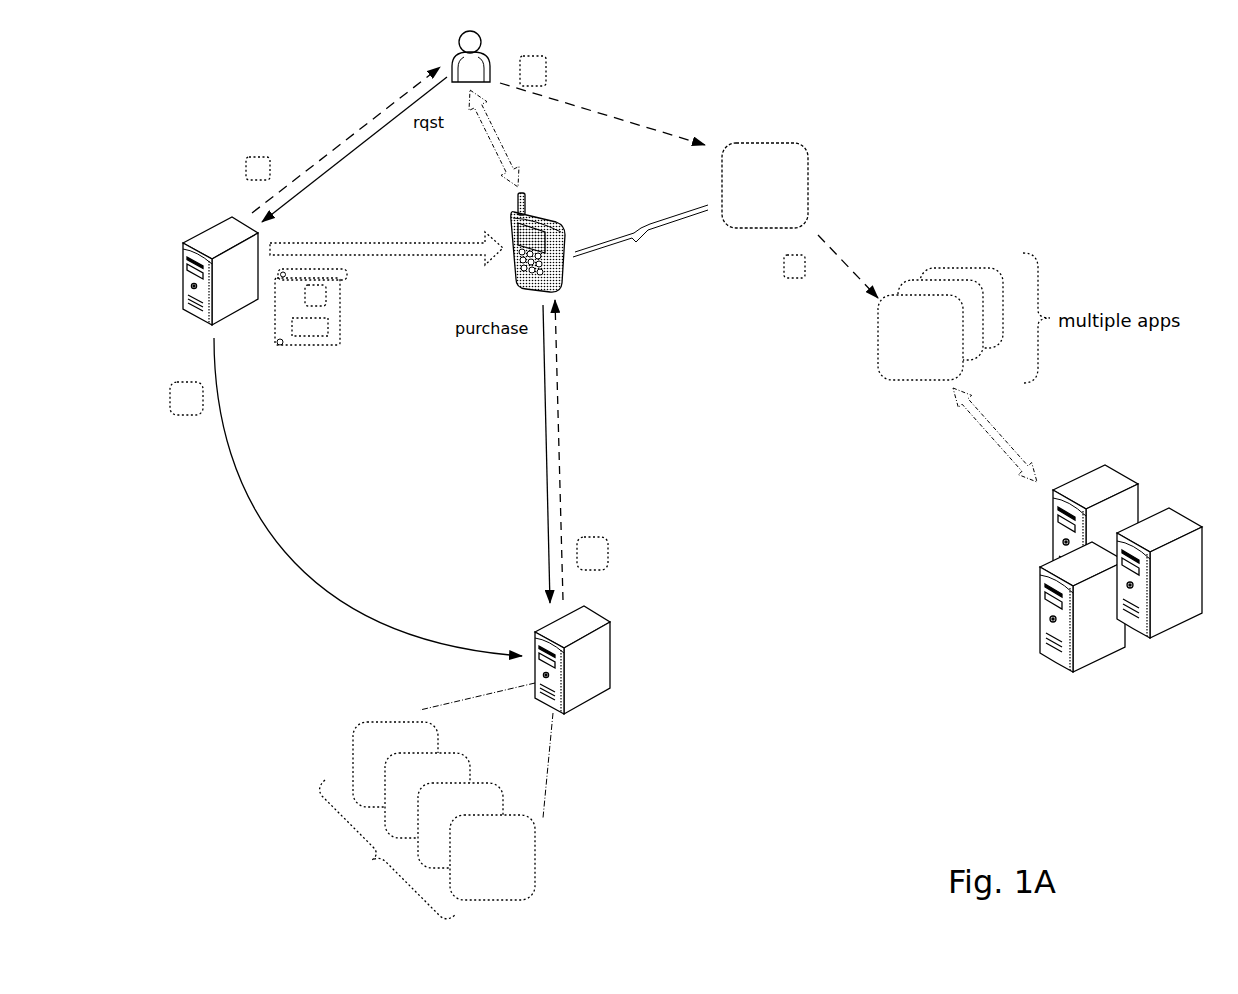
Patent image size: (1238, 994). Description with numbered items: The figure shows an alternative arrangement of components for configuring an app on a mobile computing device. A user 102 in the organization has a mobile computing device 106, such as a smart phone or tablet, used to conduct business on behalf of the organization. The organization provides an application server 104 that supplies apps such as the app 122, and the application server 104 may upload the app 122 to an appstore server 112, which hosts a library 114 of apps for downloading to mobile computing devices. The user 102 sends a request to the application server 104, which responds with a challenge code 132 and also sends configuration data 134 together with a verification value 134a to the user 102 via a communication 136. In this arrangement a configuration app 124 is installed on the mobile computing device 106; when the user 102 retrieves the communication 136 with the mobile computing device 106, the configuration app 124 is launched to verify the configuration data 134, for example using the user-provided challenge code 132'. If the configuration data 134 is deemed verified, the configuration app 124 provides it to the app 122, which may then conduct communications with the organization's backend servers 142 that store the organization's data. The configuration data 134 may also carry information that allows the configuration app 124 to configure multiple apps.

The user 102 is at (458, 40).
The application server 104 is at (181, 276).
The mobile computing device 106 is at (566, 268).
The appstore server 112 is at (612, 660).
The library of apps 114 is at (436, 801).
The app 122 is at (168, 394).
The configuration app 124 is at (810, 190).
The challenge code 132 is at (220, 166).
The challenge code 132' is at (574, 72).
The configuration data 134 is at (328, 297).
The verification value 134a is at (330, 328).
The communication 136 is at (305, 346).
The backend servers 142 is at (1000, 637).